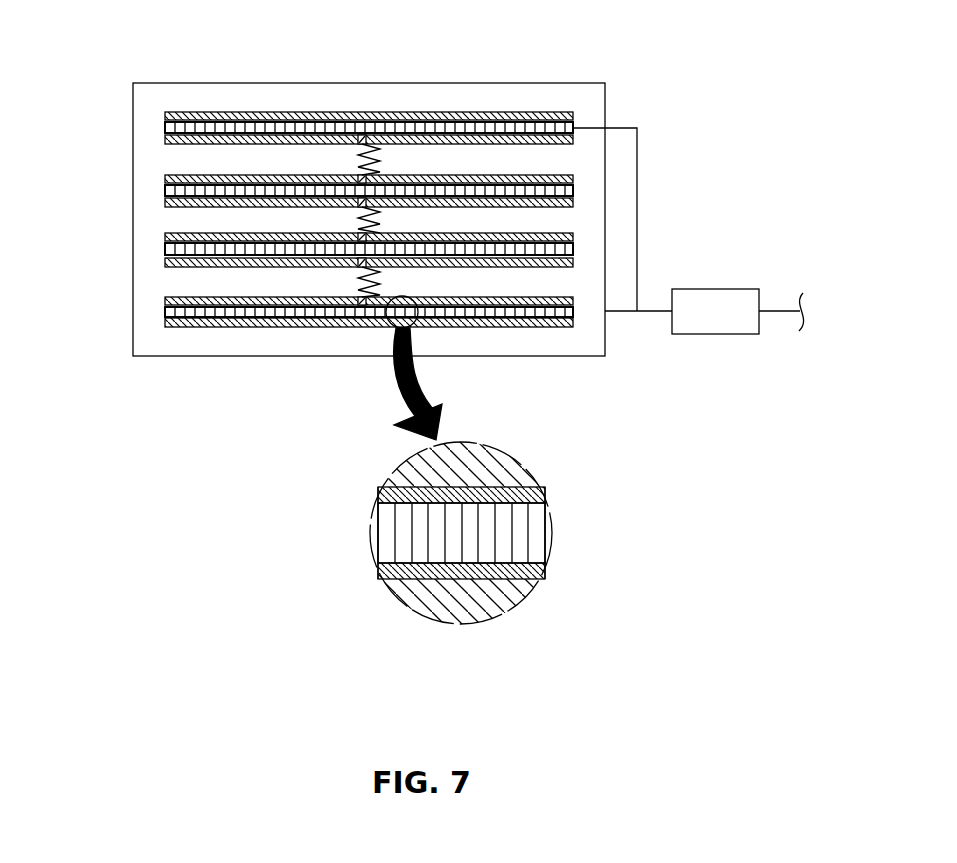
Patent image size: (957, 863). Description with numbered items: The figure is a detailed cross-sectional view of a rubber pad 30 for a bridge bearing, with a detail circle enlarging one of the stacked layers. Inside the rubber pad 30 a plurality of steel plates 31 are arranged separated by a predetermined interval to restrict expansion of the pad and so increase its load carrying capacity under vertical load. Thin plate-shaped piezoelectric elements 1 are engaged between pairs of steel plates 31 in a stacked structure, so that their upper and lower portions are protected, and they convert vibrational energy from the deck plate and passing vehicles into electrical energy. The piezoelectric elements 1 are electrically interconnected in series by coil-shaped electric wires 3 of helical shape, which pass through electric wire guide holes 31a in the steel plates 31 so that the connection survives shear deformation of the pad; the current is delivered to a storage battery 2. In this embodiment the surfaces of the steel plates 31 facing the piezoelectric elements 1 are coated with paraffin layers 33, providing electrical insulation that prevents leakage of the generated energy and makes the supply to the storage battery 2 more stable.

The piezoelectric element 1 is at (225, 312).
The storage battery 2 is at (716, 305).
The coil-shaped electric wire 3 is at (364, 150).
The rubber pad 30 is at (488, 96).
The steel plate 31 is at (190, 265).
The electric wire guide hole 31a is at (362, 138).
The paraffin layer 33 is at (545, 577).